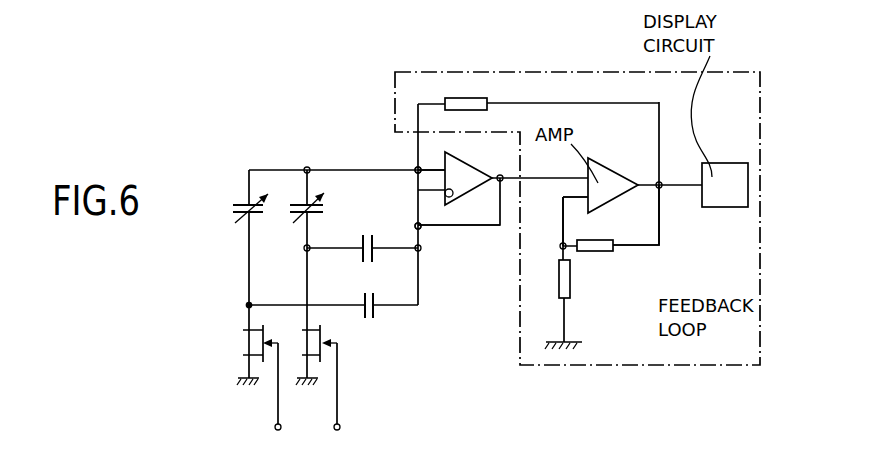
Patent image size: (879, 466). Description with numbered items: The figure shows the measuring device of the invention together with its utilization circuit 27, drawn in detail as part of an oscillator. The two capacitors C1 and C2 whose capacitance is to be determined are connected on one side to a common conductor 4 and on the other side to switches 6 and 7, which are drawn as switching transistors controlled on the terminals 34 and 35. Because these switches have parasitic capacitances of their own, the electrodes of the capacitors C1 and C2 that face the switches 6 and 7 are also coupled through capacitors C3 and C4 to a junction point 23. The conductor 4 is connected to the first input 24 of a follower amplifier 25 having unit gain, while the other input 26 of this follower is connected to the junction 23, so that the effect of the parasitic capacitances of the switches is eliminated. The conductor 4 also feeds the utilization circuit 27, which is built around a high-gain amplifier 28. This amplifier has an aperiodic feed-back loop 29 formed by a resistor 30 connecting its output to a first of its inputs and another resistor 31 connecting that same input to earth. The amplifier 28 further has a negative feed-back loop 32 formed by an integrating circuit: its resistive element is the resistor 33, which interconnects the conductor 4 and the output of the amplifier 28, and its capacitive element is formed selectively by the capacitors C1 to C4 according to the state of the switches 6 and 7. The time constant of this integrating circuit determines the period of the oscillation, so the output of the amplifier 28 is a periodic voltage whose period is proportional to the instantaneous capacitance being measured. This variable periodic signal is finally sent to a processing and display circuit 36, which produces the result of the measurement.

The conductor 4 is at (333, 170).
The switch 6 is at (265, 368).
The switch 7 is at (325, 338).
The junction point 23 is at (421, 229).
The first input of follower amplifier 24 is at (441, 168).
The follower amplifier 25 is at (473, 168).
The other input of follower amplifier 26 is at (456, 196).
The utilization circuit 27 is at (558, 79).
The high-gain amplifier 28 is at (607, 178).
The feed-back loop 29 is at (581, 256).
The resistor 30 is at (606, 254).
The resistor 31 is at (570, 286).
The negative feed-back loop 32 is at (361, 155).
The resistor 33 is at (467, 104).
The terminal 34 is at (279, 431).
The terminal 35 is at (341, 427).
The processing and display circuit 36 is at (722, 170).
The capacitor C1 is at (248, 204).
The capacitor C2 is at (301, 211).
The capacitor C3 is at (374, 311).
The capacitor C4 is at (363, 236).